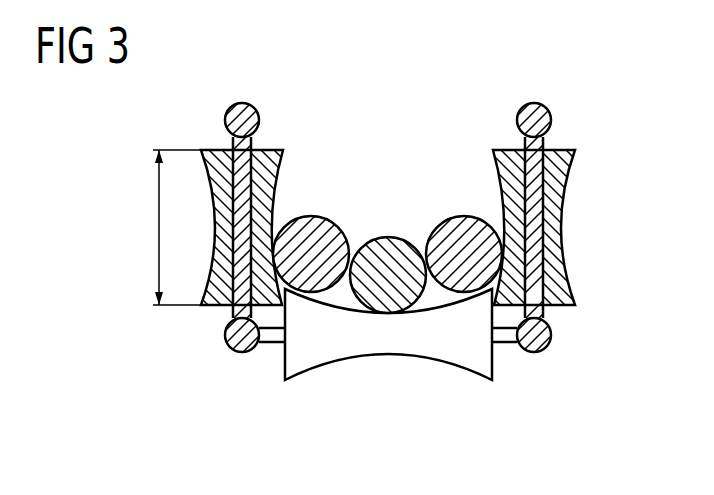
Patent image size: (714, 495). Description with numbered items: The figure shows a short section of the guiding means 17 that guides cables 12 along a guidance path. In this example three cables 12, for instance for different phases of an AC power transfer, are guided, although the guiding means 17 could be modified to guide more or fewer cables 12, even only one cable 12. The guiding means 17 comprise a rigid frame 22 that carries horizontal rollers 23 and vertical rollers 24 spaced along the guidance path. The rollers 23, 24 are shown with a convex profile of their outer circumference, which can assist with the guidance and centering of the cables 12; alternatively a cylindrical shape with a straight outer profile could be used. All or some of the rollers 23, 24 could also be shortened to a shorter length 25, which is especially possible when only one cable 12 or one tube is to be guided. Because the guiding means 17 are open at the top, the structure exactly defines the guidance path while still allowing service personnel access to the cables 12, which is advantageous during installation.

The cables 12 is at (374, 236).
The guiding means 17 is at (357, 294).
The rigid frame 22 is at (530, 338).
The horizontal rollers 23 is at (425, 362).
The vertical rollers 24 is at (553, 207).
The shorter length 25 is at (159, 218).